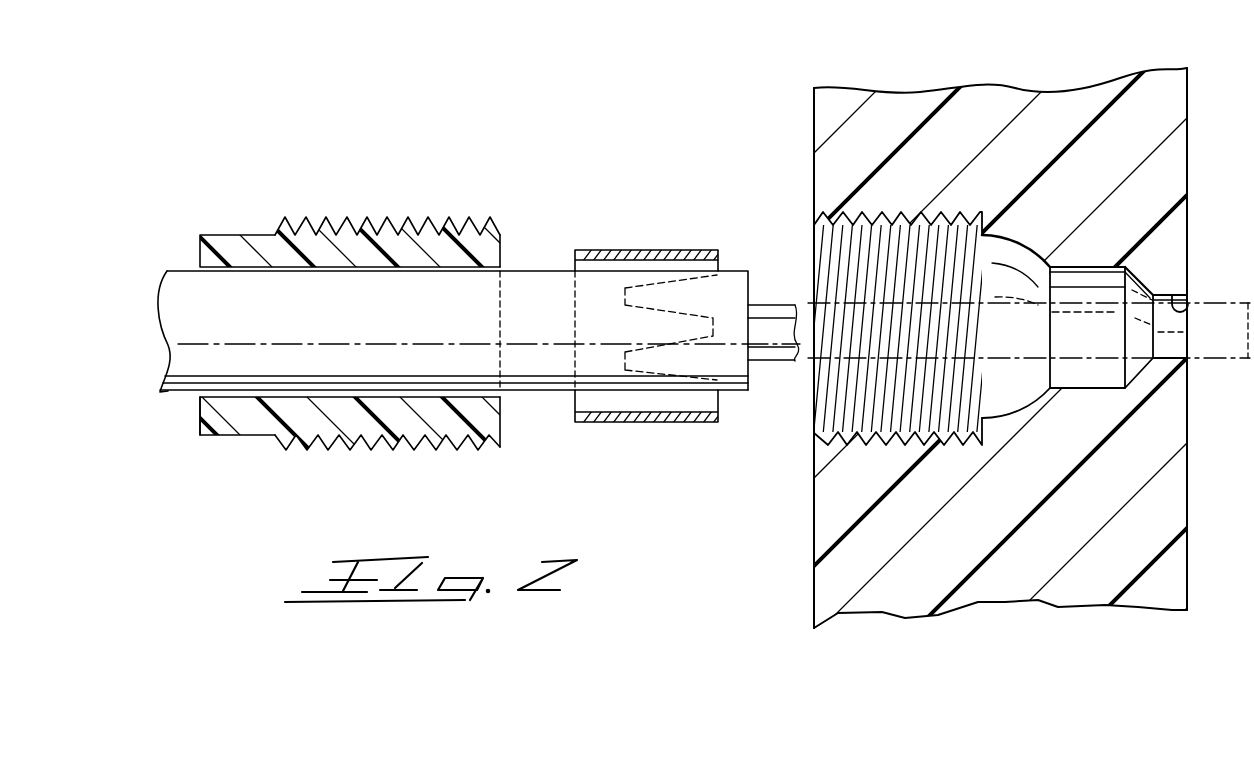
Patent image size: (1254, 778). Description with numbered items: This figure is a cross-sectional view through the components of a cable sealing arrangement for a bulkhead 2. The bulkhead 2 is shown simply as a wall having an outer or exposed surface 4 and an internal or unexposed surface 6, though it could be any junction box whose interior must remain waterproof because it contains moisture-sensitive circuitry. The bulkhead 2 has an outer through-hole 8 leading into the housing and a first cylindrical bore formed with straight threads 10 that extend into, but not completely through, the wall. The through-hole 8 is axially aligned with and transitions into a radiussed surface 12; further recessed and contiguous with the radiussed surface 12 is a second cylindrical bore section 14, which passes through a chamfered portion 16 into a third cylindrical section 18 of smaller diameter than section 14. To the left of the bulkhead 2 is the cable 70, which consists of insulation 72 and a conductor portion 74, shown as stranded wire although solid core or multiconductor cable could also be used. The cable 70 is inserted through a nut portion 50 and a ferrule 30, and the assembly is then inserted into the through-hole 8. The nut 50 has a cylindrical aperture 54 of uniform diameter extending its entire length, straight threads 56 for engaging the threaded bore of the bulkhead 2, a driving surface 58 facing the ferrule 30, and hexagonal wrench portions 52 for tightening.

The bulkhead 2 is at (968, 82).
The outer or exposed surface 4 is at (813, 124).
The internal or unexposed surface 6 is at (1187, 172).
The through-hole 8 is at (805, 247).
The straight threads 10 is at (890, 215).
The radiussed surface 12 is at (1027, 245).
The second cylindrical bore section 14 is at (1090, 265).
The chamfered portion 16 is at (1140, 282).
The third cylindrical section 18 is at (1188, 305).
The ferrule 30 is at (645, 245).
The nut portion 50 is at (363, 302).
The hexagonal wrench portions 52 is at (244, 235).
The cylindrical aperture 54 is at (197, 397).
The straight threads 56 is at (378, 217).
The driving surface 58 is at (503, 248).
The cable 70 is at (182, 262).
The insulation 72 is at (553, 278).
The conductor portion 74 is at (782, 350).